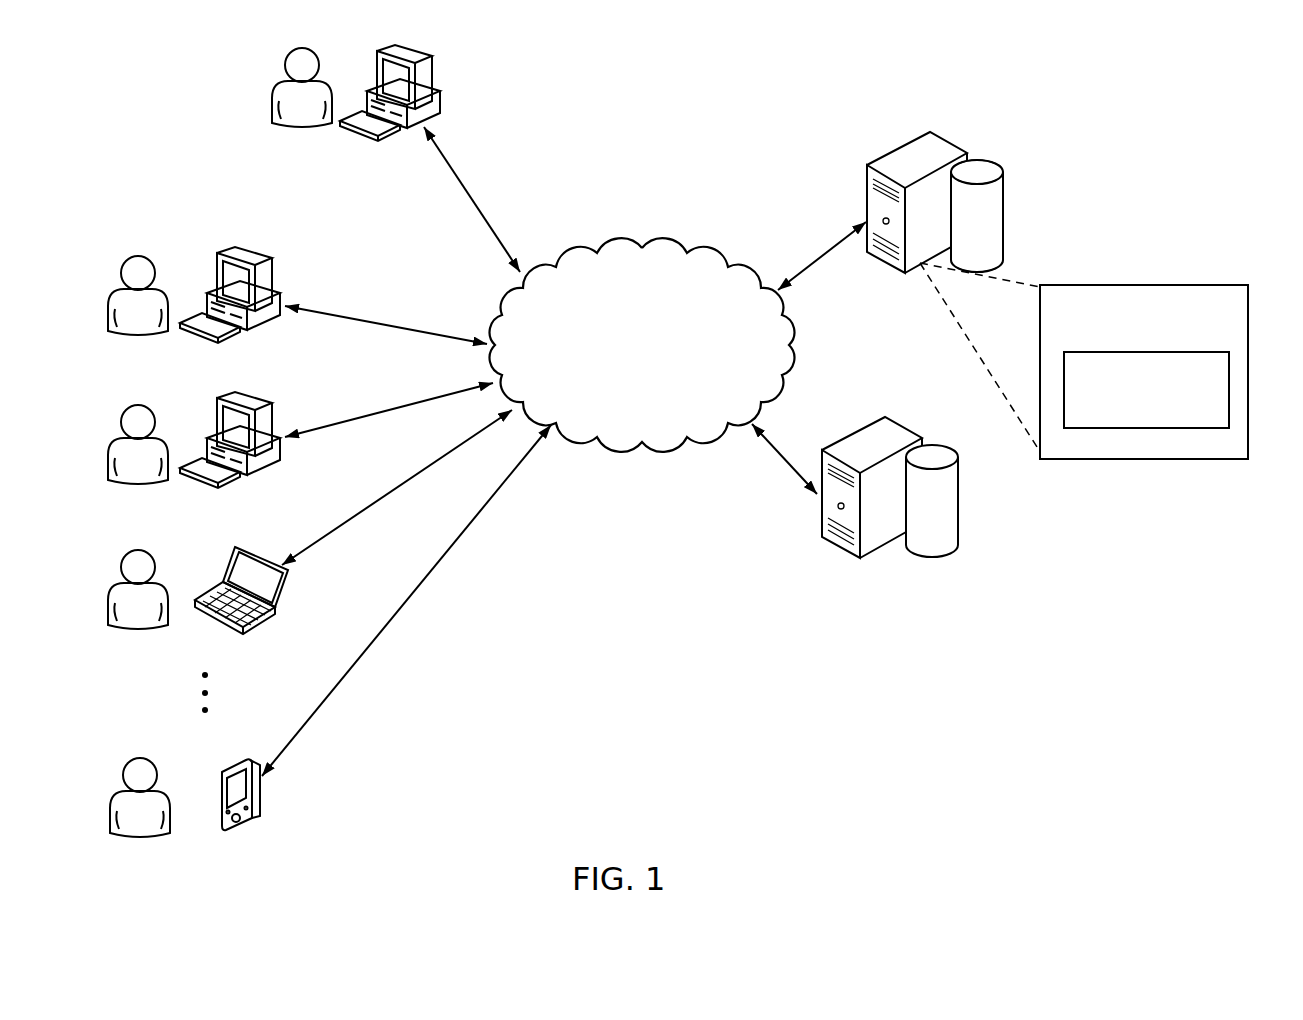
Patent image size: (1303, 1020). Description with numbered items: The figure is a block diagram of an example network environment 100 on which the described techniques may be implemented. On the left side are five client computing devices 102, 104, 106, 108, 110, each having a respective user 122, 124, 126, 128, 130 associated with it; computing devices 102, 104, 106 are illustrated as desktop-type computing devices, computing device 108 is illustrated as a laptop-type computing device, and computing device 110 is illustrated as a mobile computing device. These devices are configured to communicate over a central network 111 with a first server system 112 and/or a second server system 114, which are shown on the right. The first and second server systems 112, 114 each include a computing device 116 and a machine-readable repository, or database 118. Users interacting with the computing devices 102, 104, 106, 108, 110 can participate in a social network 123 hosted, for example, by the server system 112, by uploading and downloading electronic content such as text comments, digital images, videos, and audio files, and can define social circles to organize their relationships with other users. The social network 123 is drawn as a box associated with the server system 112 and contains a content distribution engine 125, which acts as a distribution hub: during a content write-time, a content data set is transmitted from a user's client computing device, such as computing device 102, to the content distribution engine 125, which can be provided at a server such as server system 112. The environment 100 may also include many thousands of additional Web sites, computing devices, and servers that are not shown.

The network environment 100 is at (752, 109).
The computing device 102 is at (397, 48).
The computing device 104 is at (236, 250).
The computing device 106 is at (236, 392).
The laptop-type computing device 108 is at (240, 547).
The mobile computing device 110 is at (222, 760).
The network 111 is at (655, 245).
The first server system 112 is at (943, 222).
The second server system 114 is at (900, 423).
The computing device 116 is at (945, 140).
The database 118 is at (1003, 210).
The user 122 is at (280, 93).
The social network 123 is at (1240, 318).
The user 124 is at (150, 258).
The content distribution engine 125 is at (1148, 428).
The user 126 is at (150, 405).
The user 128 is at (152, 555).
The user 130 is at (152, 762).